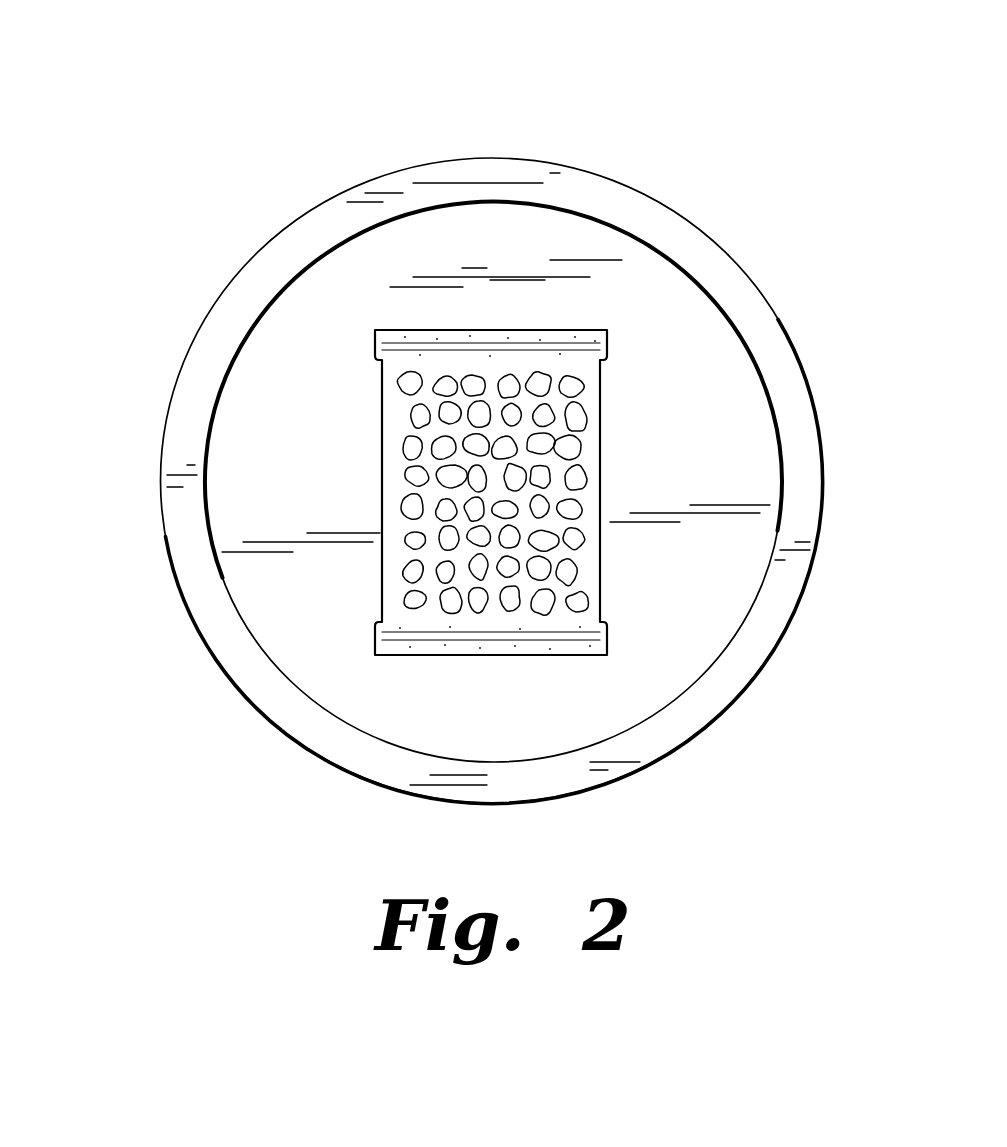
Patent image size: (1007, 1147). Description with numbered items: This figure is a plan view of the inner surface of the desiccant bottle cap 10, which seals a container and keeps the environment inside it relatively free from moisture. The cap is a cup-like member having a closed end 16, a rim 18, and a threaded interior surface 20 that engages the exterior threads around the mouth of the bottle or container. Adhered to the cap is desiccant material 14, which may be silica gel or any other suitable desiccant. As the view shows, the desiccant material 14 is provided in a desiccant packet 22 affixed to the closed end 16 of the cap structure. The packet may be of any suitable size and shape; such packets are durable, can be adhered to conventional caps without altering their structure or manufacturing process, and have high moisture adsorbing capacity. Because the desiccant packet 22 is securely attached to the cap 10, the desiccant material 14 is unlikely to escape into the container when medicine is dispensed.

The desiccant bottle cap 10 is at (752, 115).
The desiccant material 14 is at (410, 575).
The closed end 16 is at (687, 340).
The rim 18 is at (795, 352).
The threaded interior surface 20 is at (205, 355).
The desiccant packet 22 is at (325, 467).